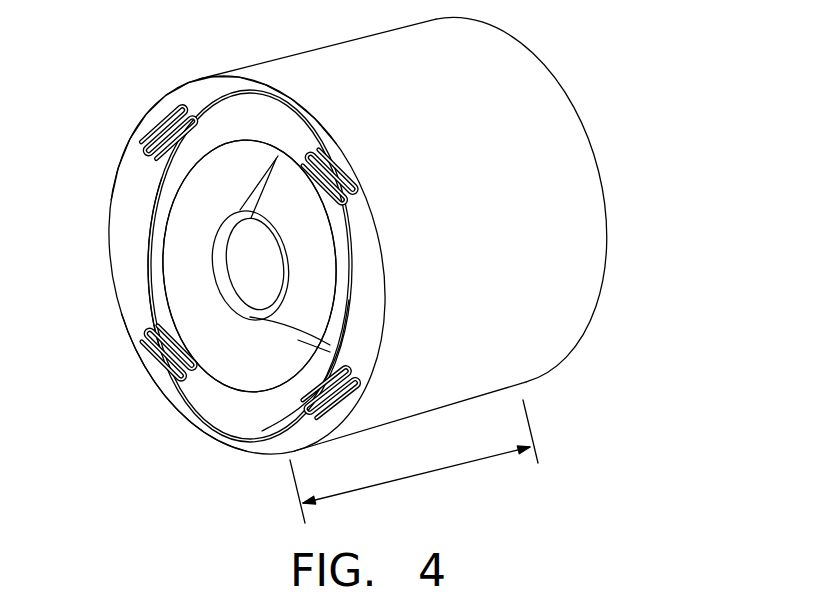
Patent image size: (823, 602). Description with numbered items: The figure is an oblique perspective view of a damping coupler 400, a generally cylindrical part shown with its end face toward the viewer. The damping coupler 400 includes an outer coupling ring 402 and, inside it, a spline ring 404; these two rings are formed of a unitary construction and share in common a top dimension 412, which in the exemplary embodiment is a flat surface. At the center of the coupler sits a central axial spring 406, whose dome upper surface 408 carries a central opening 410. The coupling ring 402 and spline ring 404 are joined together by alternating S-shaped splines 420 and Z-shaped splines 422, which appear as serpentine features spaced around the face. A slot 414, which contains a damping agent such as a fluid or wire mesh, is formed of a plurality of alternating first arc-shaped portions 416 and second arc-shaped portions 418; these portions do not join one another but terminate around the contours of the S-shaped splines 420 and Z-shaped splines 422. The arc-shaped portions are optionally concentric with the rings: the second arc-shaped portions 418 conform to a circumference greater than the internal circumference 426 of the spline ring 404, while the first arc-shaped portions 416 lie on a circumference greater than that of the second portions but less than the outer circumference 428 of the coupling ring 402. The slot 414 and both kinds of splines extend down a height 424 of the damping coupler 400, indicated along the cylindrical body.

The damping coupler 400 is at (402, 268).
The coupling ring 402 is at (565, 249).
The spline ring 404 is at (222, 128).
The central axial spring 406 is at (198, 275).
The dome upper surface 408 is at (278, 337).
The central opening 410 is at (258, 243).
The top dimension 412 is at (118, 172).
The slot 414 is at (185, 406).
The first arc-shaped portions 416 is at (291, 114).
The second arc-shaped portions 418 is at (350, 312).
The S-shaped splines 420 is at (322, 174).
The Z-shaped splines 422 is at (348, 398).
The height 424 is at (415, 477).
The internal circumference 426 is at (172, 201).
The outer circumference 428 is at (242, 74).